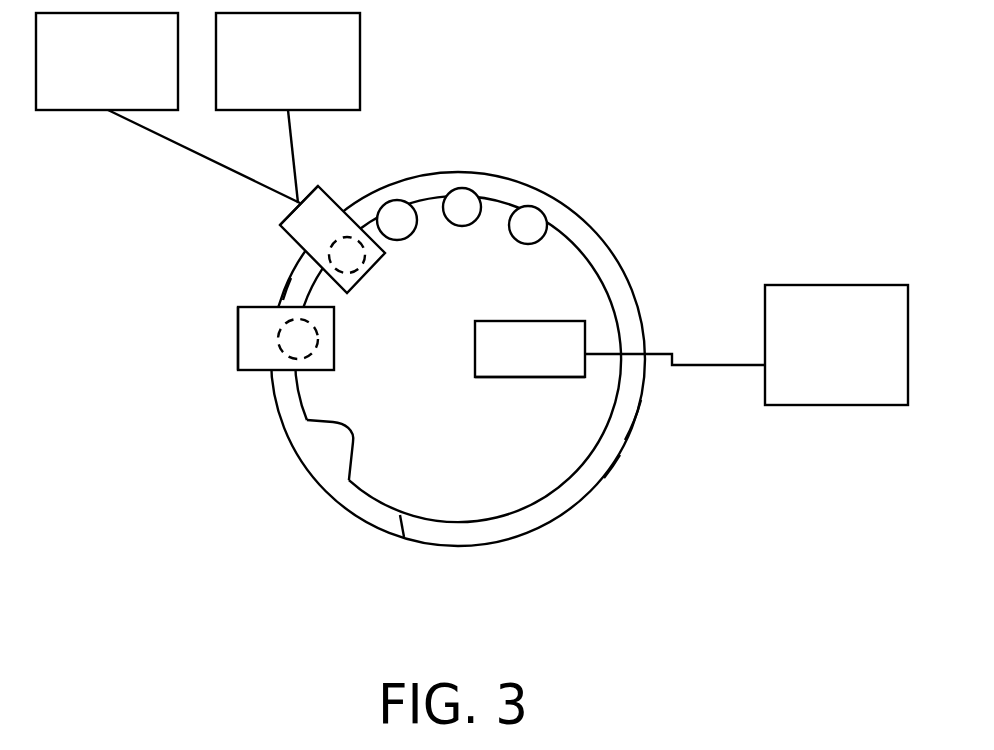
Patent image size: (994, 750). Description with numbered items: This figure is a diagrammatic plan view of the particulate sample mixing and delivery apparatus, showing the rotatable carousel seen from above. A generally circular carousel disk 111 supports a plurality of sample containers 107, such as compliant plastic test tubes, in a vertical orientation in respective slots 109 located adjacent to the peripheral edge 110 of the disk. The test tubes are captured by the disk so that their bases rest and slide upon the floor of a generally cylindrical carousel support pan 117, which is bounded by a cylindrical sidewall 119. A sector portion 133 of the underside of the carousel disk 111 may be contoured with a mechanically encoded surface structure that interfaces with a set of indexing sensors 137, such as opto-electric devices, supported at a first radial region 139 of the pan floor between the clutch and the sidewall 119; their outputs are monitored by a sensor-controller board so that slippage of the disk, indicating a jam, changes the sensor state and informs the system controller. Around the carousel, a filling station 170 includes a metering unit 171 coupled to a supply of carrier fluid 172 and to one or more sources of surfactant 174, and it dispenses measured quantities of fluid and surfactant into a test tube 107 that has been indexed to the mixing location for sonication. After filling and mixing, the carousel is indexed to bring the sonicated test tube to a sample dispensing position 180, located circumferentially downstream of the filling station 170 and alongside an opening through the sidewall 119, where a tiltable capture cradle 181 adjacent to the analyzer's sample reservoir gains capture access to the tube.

The sample containers 107 is at (463, 207).
The slots 109 is at (353, 437).
The peripheral edge 110 is at (400, 515).
The carousel disk 111 is at (520, 478).
The carousel support pan 117 is at (523, 535).
The cylindrical sidewall 119 is at (633, 420).
The sector portion 133 is at (287, 288).
The indexing sensors 137 is at (560, 320).
The first radial region 139 is at (528, 377).
The filling station 170 is at (343, 200).
The metering unit 171 is at (282, 227).
The supply of carrier fluid 172 is at (88, 101).
The sources of surfactant 174 is at (268, 101).
The sample dispensing position 180 is at (334, 330).
The tiltable capture cradle 181 is at (238, 337).